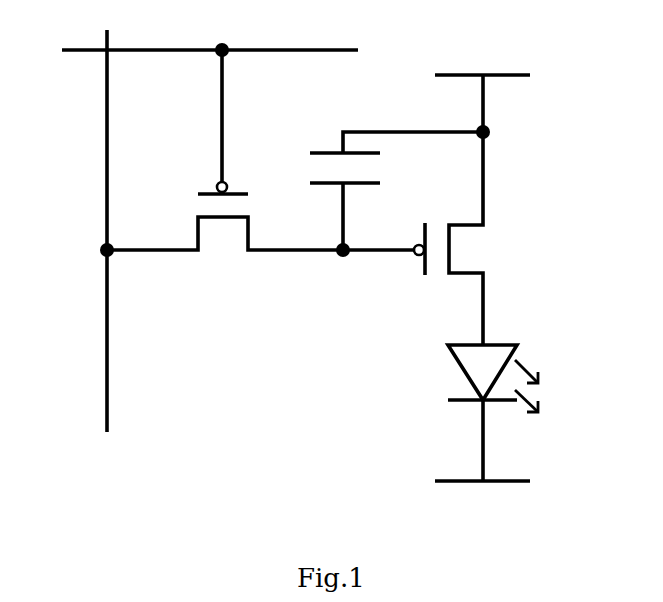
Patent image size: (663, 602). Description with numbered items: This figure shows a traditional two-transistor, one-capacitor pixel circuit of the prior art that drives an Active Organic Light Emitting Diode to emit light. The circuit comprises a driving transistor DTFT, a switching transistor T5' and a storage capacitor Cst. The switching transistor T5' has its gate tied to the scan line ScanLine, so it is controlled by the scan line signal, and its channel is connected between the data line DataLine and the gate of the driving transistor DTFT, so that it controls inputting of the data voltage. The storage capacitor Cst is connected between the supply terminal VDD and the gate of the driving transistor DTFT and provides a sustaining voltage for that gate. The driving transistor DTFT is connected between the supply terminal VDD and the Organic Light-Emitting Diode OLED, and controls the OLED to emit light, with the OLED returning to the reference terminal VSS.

The scan line ScanLine is at (210, 28).
The data line DataLine is at (74, 231).
The switching transistor T5' is at (225, 151).
The storage capacitor Cst is at (396, 191).
The power supply voltage VDD is at (482, 86).
The driving transistor DTFT is at (444, 238).
The Organic Light-Emitting Diode OLED is at (449, 413).
The reference voltage VSS is at (482, 502).